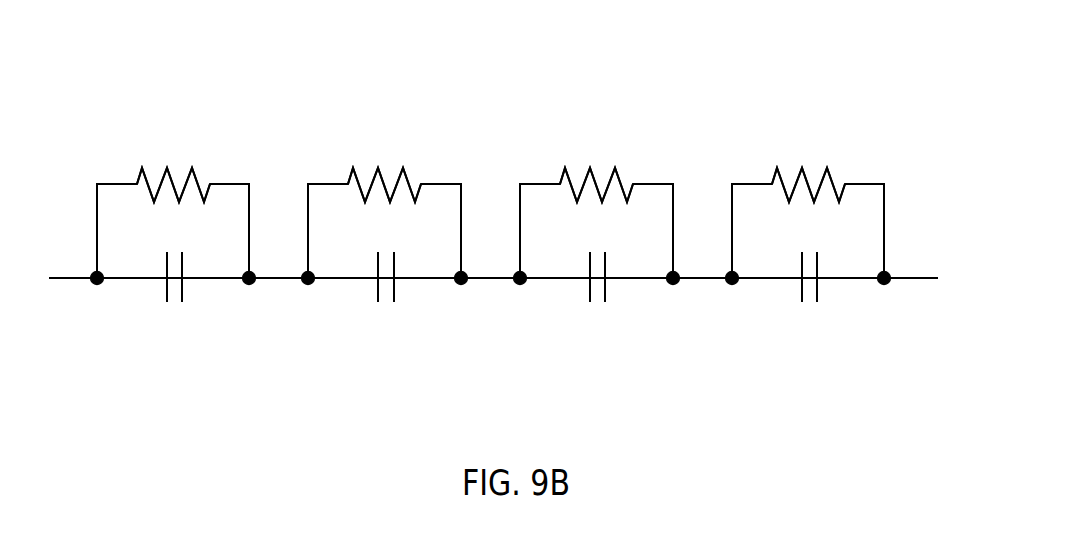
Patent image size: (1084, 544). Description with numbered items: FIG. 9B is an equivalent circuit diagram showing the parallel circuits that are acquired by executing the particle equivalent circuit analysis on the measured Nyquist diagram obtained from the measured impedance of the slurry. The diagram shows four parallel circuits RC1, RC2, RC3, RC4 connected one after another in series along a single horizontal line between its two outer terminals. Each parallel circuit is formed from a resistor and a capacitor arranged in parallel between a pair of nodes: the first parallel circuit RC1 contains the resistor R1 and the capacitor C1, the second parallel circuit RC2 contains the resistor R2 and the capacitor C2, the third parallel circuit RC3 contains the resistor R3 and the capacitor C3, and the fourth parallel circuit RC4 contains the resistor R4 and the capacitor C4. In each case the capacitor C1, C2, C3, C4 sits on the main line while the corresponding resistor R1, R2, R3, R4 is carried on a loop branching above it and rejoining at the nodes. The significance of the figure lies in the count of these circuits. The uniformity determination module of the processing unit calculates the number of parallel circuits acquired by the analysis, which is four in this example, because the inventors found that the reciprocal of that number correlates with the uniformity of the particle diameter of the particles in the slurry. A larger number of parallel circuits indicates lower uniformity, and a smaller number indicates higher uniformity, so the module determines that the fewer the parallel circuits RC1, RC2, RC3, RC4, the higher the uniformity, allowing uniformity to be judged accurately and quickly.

The parallel circuit RC1 is at (218, 155).
The parallel circuit RC2 is at (433, 152).
The parallel circuit RC3 is at (633, 152).
The parallel circuit RC4 is at (827, 148).
The resistor R1 is at (162, 177).
The resistor R2 is at (370, 177).
The resistor R3 is at (584, 177).
The resistor R4 is at (793, 178).
The capacitor C1 is at (167, 302).
The capacitor C2 is at (378, 302).
The capacitor C3 is at (590, 302).
The capacitor C4 is at (802, 302).